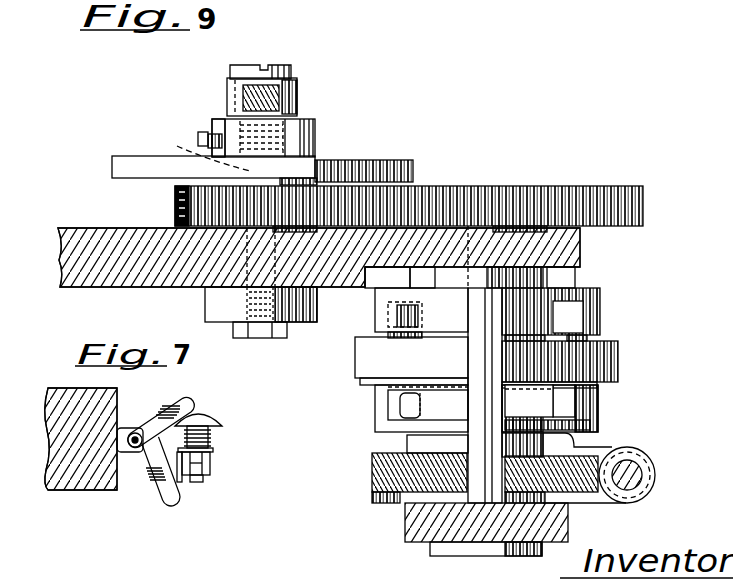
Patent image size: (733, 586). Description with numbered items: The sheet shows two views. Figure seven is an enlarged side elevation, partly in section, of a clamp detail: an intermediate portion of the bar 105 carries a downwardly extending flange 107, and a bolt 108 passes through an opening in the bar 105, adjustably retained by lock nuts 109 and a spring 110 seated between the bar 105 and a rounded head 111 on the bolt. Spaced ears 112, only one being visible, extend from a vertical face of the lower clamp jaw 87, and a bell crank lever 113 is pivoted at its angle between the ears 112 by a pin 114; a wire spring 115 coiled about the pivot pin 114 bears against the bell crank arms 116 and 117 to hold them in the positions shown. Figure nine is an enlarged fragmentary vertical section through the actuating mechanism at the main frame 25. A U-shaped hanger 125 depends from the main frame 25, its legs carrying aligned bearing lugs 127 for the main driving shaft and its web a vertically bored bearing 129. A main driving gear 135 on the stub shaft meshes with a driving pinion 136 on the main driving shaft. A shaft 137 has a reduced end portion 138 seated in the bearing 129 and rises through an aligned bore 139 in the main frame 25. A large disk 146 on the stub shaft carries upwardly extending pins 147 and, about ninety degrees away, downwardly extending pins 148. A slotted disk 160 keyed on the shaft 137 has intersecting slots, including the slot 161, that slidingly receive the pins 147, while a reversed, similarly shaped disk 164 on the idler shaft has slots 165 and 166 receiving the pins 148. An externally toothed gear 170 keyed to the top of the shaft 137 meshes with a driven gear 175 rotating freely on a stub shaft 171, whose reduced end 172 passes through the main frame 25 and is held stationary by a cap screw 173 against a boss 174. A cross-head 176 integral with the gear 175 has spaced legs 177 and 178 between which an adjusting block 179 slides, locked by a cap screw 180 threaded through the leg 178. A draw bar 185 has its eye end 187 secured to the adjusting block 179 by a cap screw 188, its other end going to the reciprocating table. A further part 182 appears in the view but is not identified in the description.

In FIG. 9, the main frame 25 is at (582, 248).
In FIG. 7, the lower clamp jaw 87 is at (117, 492).
In FIG. 7, the bar 105 is at (213, 454).
In FIG. 7, the downwardly extending flange 107 is at (180, 484).
In FIG. 7, the bolt 108 is at (199, 483).
In FIG. 7, the lock nuts 109 is at (212, 467).
In FIG. 7, the spring 110 is at (209, 440).
In FIG. 7, the head 111 is at (207, 415).
In FIG. 7, the spaced ears 112 is at (124, 452).
In FIG. 7, the bell crank lever 113 is at (191, 386).
In FIG. 7, the pin 114 is at (132, 430).
In FIG. 7, the wire spring 115 is at (144, 440).
In FIG. 7, the bell crank arm 116 is at (172, 502).
In FIG. 7, the bell crank arm 117 is at (183, 402).
In FIG. 9, the U-shaped hanger 125 is at (420, 545).
In FIG. 9, the bearing lugs 127 is at (585, 436).
In FIG. 9, the bearing 129 is at (452, 558).
In FIG. 9, the main driving gear 135 is at (372, 478).
In FIG. 9, the driving pinion 136 is at (657, 481).
In FIG. 9, the shaft 137 is at (468, 445).
In FIG. 9, the reduced end portion 138 is at (505, 560).
In FIG. 9, the bore 139 is at (581, 265).
In FIG. 9, the large disk 146 is at (620, 362).
In FIG. 9, the upwardly extending pins 147 is at (362, 335).
In FIG. 9, the downwardly extending pins 148 is at (375, 383).
In FIG. 9, the slotted disk 160 is at (600, 313).
In FIG. 9, the slot 161 is at (568, 317).
In FIG. 9, the disk 164 is at (375, 417).
In FIG. 9, the slot 165 is at (420, 405).
In FIG. 9, the slot 166 is at (555, 403).
In FIG. 9, the externally toothed gear 170 is at (645, 203).
In FIG. 9, the stub shaft 171 is at (178, 146).
In FIG. 9, the reduced end portion 172 is at (203, 288).
In FIG. 9, the cap screw 173 is at (283, 340).
In FIG. 9, the boss 174 is at (317, 315).
In FIG. 9, the driven gear 175 is at (176, 205).
In FIG. 9, the cross-head 176 is at (415, 167).
In FIG. 9, the leg 177 is at (291, 130).
In FIG. 9, the leg 178 is at (222, 118).
In FIG. 9, the adjusting block 179 is at (294, 127).
In FIG. 9, the cap screw 180 is at (203, 132).
In FIG. 9, the bearing 182 is at (422, 312).
In FIG. 9, the draw bar 185 is at (296, 88).
In FIG. 9, the eye portion 187 is at (227, 95).
In FIG. 9, the cap screw 188 is at (242, 63).